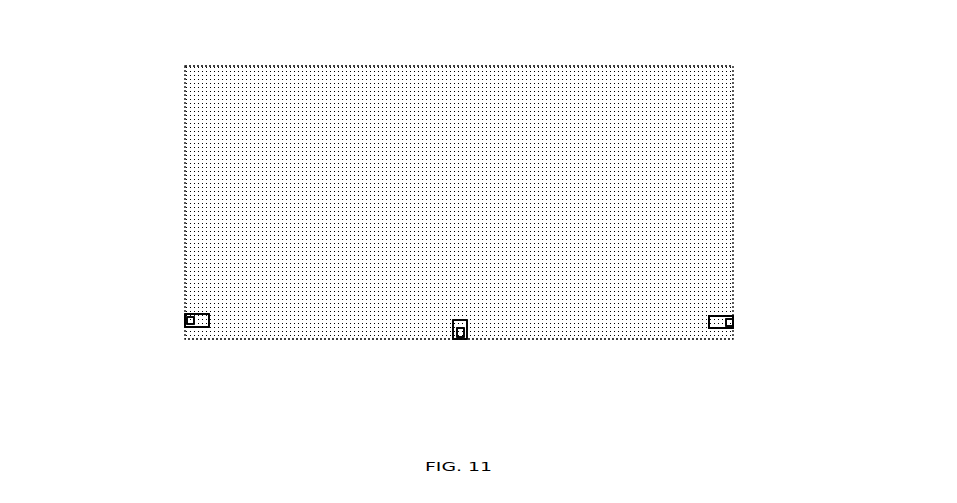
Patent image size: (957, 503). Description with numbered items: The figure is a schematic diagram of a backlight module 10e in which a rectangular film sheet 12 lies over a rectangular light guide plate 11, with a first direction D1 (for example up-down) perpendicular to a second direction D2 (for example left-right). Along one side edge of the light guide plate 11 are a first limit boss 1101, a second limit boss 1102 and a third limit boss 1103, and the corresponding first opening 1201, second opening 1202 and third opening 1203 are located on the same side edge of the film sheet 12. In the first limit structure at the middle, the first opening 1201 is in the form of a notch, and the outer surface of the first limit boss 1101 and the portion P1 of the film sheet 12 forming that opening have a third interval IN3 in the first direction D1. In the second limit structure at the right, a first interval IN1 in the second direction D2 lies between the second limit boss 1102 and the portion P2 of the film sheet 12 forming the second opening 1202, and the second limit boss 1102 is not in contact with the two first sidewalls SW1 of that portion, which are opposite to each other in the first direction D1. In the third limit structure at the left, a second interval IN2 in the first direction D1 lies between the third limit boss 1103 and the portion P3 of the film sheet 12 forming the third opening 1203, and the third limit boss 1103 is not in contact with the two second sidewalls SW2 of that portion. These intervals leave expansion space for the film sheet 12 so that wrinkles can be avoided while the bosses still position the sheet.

The backlight module 10e is at (595, 35).
The first direction D1 is at (85, 113).
The second direction D2 is at (57, 77).
The light guide plate 11 is at (733, 321).
The film sheet 12 is at (733, 318).
The first sidewalls SW1 is at (733, 316).
The portion of the film sheet forming the second opening P2 is at (731, 316).
The first interval IN1 is at (714, 328).
The second limit boss 1102 is at (733, 330).
The second opening 1202 is at (727, 330).
The third interval IN3 is at (453, 331).
The portion of the film sheet forming the first opening P1 is at (467, 321).
The first opening 1201 is at (463, 339).
The first limit boss 1101 is at (458, 339).
The second sidewalls SW2 is at (190, 314).
The portion of the film sheet forming the third opening P3 is at (188, 314).
The second interval IN2 is at (203, 327).
The third limit boss 1103 is at (188, 327).
The third opening 1203 is at (194, 327).